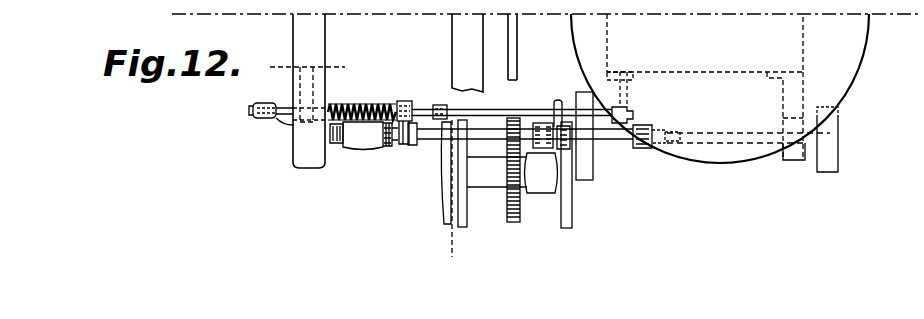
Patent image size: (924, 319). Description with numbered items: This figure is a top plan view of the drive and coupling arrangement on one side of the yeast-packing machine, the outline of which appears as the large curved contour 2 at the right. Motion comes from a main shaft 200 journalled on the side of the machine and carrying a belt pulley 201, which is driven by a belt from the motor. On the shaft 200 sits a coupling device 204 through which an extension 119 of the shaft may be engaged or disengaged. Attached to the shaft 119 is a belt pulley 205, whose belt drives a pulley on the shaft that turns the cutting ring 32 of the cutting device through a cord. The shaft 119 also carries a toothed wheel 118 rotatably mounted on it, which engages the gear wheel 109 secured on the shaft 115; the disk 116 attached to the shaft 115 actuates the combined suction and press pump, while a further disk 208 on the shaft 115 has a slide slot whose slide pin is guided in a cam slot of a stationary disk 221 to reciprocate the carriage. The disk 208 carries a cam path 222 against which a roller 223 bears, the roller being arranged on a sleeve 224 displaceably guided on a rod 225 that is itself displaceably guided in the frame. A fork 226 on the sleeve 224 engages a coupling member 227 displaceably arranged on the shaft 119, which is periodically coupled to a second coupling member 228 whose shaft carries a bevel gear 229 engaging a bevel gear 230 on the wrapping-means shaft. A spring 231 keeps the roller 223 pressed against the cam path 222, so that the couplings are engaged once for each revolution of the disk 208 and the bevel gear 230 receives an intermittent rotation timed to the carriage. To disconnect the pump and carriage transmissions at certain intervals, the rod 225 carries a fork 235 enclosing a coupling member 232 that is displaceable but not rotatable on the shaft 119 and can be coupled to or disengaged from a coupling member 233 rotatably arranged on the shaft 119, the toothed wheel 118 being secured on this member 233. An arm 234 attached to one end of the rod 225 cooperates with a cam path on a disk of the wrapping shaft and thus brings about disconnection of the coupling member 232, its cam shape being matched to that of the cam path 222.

The drum casing 2 is at (849, 90).
The ring 32 is at (508, 48).
The gear wheel 109 is at (519, 214).
The shaft 115 is at (494, 180).
The disk 116 is at (573, 218).
The toothed wheel 118 is at (535, 123).
The shaft extension 119 is at (433, 136).
The main shaft 200 is at (705, 142).
The belt pulley 201 is at (830, 171).
The coupling device 204 is at (641, 150).
The belt pulley 205 is at (586, 180).
The disk 208 is at (455, 192).
The stationary disk 221 is at (466, 223).
The cam path 222 is at (441, 205).
The roller 223 is at (440, 106).
The sleeve 224 is at (418, 107).
The rod 225 is at (485, 112).
The fork 226 is at (400, 148).
The coupling member 227 is at (395, 150).
The second coupling member 228 is at (380, 148).
The bevel gear 229 is at (337, 151).
The bevel gear 230 is at (279, 125).
The spring 231 is at (352, 107).
The coupling member 232 is at (542, 132).
The coupling member 233 is at (541, 134).
The arm 234 is at (264, 102).
The fork 235 is at (578, 106).